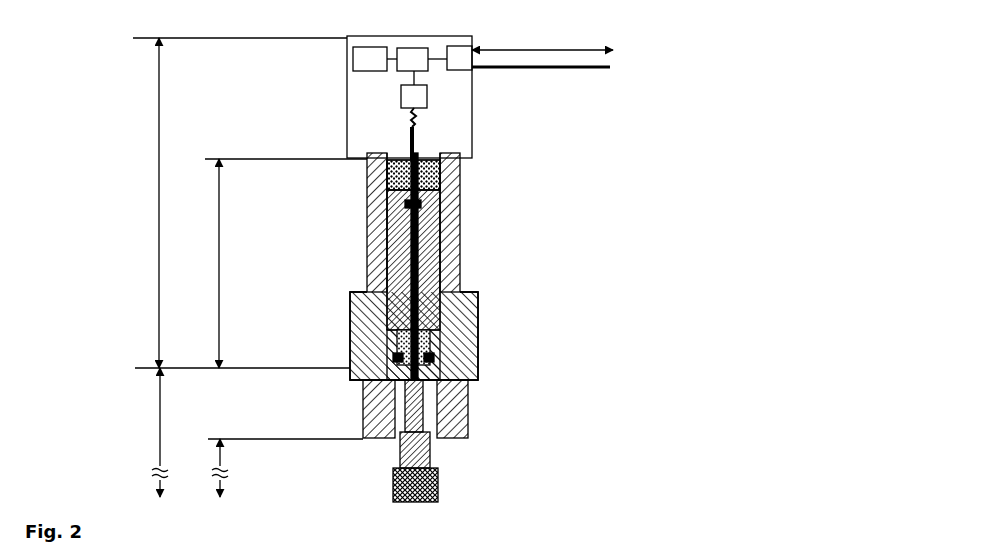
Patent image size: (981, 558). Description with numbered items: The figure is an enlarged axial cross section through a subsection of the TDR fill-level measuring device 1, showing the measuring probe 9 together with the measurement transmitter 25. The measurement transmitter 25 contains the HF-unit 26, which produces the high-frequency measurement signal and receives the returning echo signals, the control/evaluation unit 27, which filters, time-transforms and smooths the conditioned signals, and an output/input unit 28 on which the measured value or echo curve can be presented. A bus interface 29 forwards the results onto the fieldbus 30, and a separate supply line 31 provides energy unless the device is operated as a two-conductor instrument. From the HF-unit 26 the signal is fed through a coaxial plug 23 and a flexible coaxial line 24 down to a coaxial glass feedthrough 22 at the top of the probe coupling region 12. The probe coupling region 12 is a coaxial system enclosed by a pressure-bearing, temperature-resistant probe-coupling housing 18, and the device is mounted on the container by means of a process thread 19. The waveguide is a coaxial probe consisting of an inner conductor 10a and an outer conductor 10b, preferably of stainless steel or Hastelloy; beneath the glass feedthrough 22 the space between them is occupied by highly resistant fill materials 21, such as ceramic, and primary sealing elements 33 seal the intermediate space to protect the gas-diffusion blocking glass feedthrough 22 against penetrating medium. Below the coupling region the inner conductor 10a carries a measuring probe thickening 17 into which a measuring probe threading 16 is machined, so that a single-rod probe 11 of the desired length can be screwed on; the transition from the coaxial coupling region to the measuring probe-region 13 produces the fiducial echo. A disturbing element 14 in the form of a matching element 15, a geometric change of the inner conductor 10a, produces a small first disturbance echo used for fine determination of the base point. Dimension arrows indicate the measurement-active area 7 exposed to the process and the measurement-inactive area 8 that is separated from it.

The fill-level measuring device 1 is at (138, 72).
The measurement-active area 7 is at (160, 430).
The measurement-inactive area 8 is at (238, 203).
The measuring probe 9 is at (473, 327).
The inner conductor 10a is at (388, 265).
The outer conductor 10b is at (478, 305).
The single-rod probe 11 is at (372, 467).
The probe coupling region 12 is at (271, 263).
The measuring probe-region 13 is at (220, 468).
The disturbing element 14 is at (460, 171).
The matching element 15 is at (478, 320).
The measuring probe threading 16 is at (432, 462).
The measuring probe thickening 17 is at (438, 488).
The probe-coupling housing 18 is at (478, 305).
The process thread 19 is at (481, 420).
The fill materials 21 is at (462, 258).
The coaxial glass feedthrough 22 is at (460, 171).
The coaxial plug 23 is at (417, 145).
The flexible coaxial line 24 is at (420, 120).
The measurement transmitter 25 is at (389, 142).
The HF-unit 26 is at (410, 97).
The control/evaluation unit 27 is at (410, 58).
The output/input unit 28 is at (372, 57).
The bus interface 29 is at (460, 58).
The fieldbus 30 is at (560, 50).
The supply line 31 is at (558, 68).
The sealing elements 33 is at (462, 209).